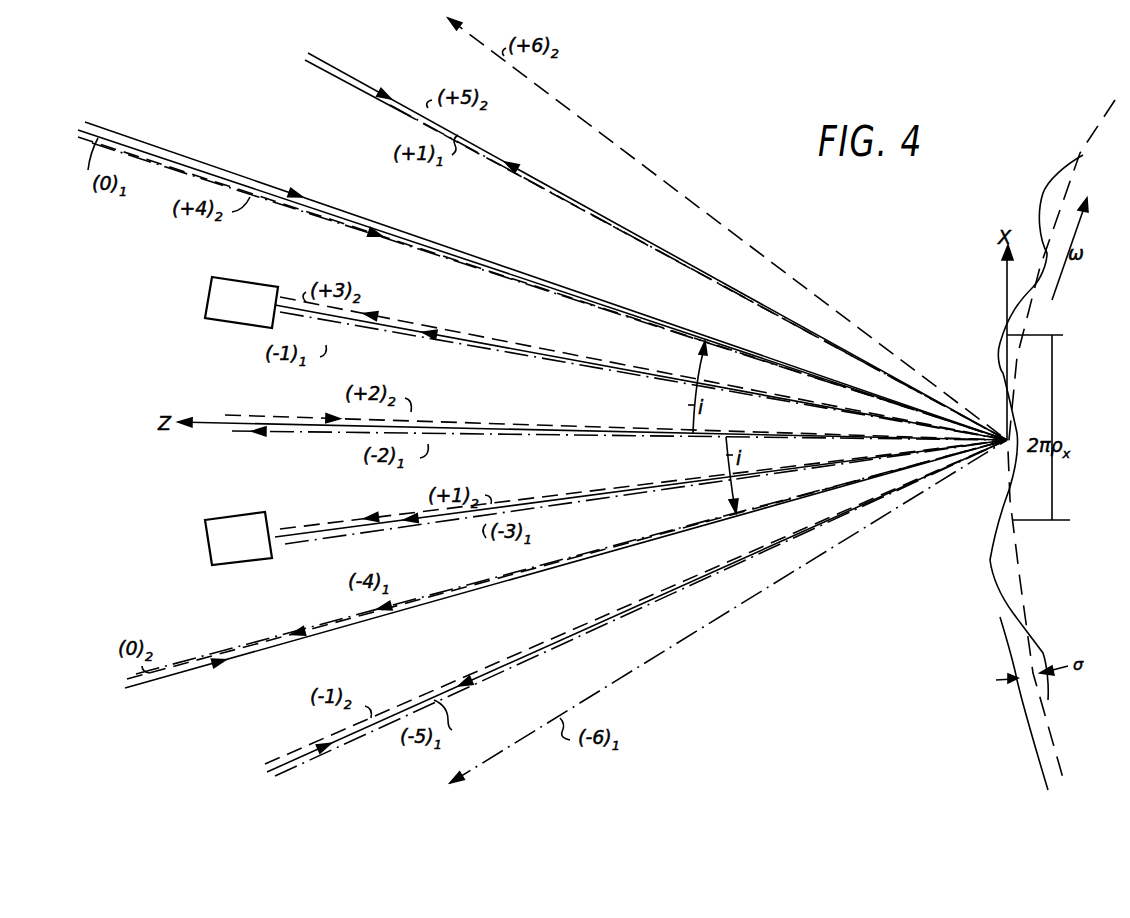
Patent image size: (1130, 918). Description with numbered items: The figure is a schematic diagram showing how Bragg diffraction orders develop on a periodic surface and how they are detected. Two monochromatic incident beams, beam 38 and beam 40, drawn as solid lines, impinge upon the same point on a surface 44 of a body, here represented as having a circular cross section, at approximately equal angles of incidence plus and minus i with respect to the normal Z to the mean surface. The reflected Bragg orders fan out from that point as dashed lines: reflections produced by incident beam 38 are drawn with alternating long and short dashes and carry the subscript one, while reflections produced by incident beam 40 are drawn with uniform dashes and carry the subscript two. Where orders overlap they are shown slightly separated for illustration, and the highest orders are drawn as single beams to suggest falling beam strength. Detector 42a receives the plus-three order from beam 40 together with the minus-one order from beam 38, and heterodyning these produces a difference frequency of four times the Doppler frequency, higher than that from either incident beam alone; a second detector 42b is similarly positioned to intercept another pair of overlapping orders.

The second beam of monochromatic light 40 is at (1114, 285).
The first monochromatic parallel beam 38 is at (128, 692).
The detector 42a is at (253, 313).
The detector 42b is at (253, 550).
The surface 44 is at (988, 562).